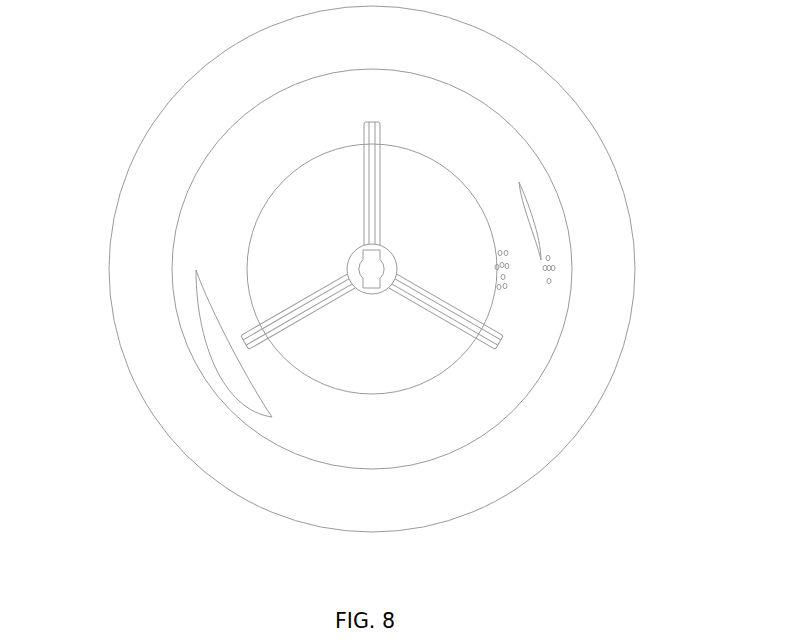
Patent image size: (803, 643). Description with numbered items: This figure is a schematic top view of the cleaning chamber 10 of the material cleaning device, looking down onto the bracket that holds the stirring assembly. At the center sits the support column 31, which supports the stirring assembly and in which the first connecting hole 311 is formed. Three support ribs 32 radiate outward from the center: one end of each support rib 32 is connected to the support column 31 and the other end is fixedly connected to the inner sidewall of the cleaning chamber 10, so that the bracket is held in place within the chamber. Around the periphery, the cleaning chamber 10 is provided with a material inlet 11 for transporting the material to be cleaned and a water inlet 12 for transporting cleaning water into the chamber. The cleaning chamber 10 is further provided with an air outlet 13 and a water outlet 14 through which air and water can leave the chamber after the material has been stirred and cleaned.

The cleaning chamber 10 is at (558, 122).
The material inlet 11 is at (228, 367).
The water inlet 12 is at (531, 212).
The air outlet 13 is at (558, 268).
The water outlet 14 is at (509, 287).
The support column 31 is at (355, 260).
The first connecting hole 311 is at (373, 273).
The support rib 32 is at (372, 197).